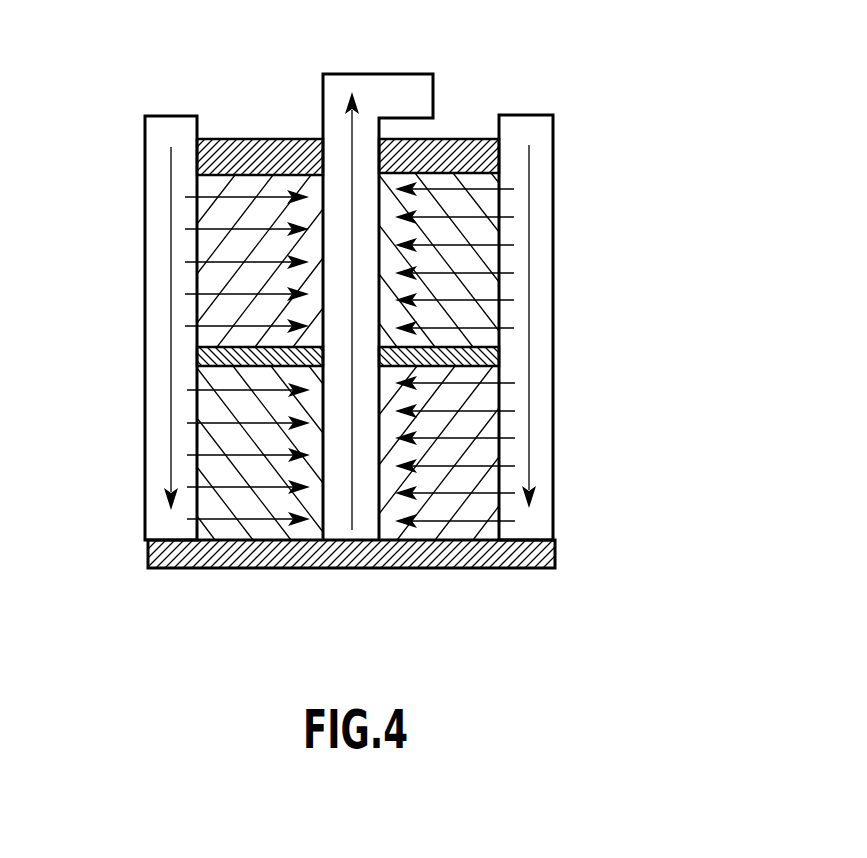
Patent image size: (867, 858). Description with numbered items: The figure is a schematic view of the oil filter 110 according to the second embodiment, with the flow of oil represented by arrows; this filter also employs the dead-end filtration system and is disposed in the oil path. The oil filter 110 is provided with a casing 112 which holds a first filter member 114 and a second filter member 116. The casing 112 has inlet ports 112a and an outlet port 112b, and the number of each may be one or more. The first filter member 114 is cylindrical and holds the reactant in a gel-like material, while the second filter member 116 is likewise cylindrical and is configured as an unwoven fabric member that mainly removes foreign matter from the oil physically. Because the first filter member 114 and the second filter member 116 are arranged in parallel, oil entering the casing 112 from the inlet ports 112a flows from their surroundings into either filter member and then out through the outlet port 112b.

The oil filter 110 is at (689, 363).
The casing 112 is at (553, 491).
The inlet ports 112a is at (155, 136).
The outlet port 112b is at (415, 85).
The first filter member 114 is at (483, 290).
The second filter member 116 is at (465, 525).